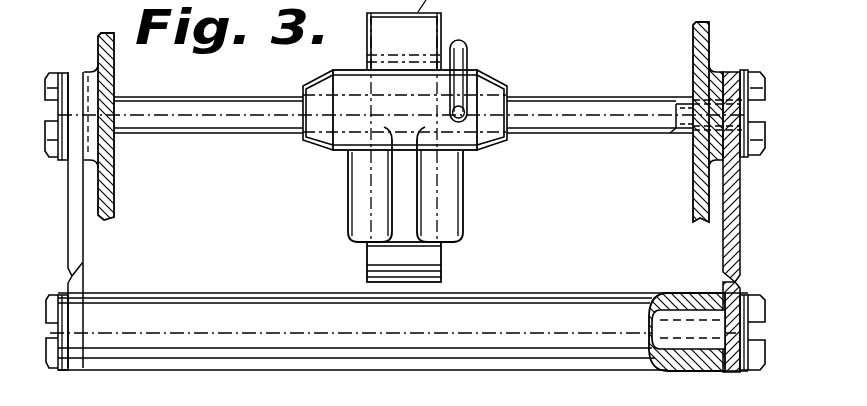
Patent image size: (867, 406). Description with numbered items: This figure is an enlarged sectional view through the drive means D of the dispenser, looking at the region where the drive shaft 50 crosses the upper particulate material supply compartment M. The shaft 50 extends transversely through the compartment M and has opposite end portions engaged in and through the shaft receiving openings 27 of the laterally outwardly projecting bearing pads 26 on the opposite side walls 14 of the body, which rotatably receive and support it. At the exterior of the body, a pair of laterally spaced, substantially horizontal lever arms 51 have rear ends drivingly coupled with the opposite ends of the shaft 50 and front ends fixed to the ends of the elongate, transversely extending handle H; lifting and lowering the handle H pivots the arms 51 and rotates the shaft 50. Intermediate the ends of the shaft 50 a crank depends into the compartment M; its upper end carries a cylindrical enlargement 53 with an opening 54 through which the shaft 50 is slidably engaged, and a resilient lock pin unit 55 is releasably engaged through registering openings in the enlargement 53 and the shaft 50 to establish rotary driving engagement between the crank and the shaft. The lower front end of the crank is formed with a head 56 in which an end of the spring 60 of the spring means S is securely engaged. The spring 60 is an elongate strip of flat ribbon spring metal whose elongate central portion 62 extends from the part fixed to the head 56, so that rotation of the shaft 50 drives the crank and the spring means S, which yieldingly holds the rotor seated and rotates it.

The side walls 14 is at (114, 183).
The bearing pads 26 is at (96, 72).
The shaft receiving openings 27 is at (678, 130).
The shaft 50 is at (205, 118).
The lever arms 51 is at (83, 258).
The cylindrical enlargement 53 is at (396, 141).
The opening 54 is at (346, 98).
The resilient lock pin unit 55 is at (470, 54).
The head 56 is at (446, 211).
The spring 60 is at (440, 258).
The central portion 62 is at (410, 63).
The particulate material supply compartment M is at (114, 157).
The drive means D is at (403, 110).
The spring means S is at (388, 262).
The handle H is at (601, 295).